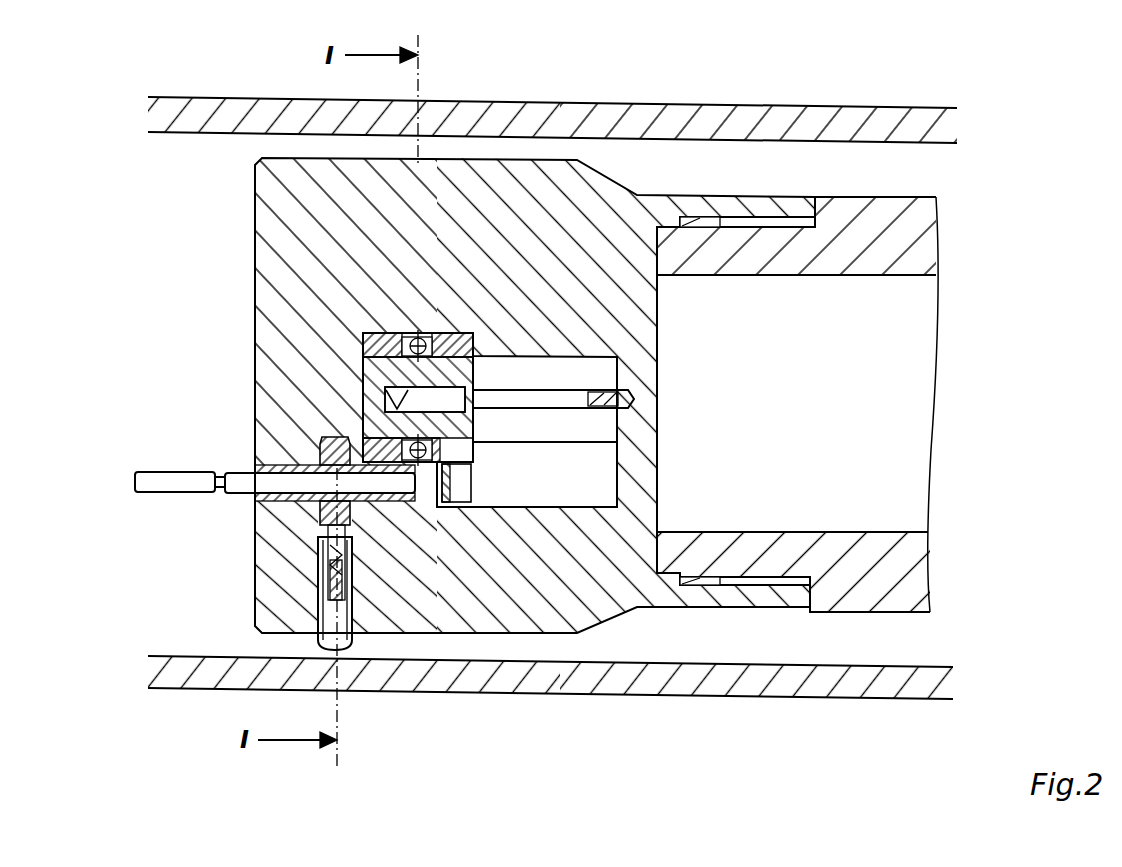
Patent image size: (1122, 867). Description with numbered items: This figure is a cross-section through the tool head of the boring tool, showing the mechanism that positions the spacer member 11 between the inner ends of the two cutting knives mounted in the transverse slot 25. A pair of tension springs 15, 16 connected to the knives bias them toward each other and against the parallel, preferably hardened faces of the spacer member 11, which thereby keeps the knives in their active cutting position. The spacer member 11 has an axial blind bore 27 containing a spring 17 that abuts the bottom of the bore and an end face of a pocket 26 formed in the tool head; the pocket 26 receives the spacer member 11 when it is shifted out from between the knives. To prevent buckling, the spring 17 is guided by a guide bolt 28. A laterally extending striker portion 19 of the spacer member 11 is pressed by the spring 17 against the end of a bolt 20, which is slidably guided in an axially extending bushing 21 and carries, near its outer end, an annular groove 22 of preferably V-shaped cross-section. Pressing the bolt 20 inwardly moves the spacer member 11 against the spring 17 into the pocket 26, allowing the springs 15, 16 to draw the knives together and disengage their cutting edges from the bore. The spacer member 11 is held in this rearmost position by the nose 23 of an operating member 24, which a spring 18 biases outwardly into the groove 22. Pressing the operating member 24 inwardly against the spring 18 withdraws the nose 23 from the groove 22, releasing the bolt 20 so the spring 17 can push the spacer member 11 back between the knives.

The spacer member 11 is at (388, 370).
The tension spring 15 is at (420, 335).
The tension spring 16 is at (413, 397).
The spring 17 is at (532, 370).
The spring 18 is at (318, 595).
The striker portion 19 is at (453, 483).
The bolt 20 is at (153, 483).
The bushing 21 is at (260, 497).
The annular groove 22 is at (213, 472).
The nose 23 is at (337, 477).
The operating member 24 is at (335, 635).
The transverse slot 25 is at (478, 372).
The pocket 26 is at (700, 212).
The axial blind bore 27 is at (438, 400).
The guide bolt 28 is at (553, 398).